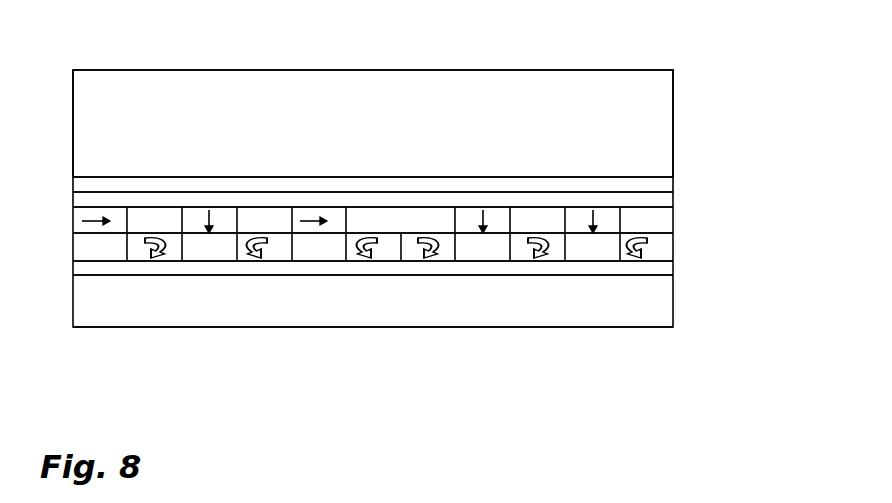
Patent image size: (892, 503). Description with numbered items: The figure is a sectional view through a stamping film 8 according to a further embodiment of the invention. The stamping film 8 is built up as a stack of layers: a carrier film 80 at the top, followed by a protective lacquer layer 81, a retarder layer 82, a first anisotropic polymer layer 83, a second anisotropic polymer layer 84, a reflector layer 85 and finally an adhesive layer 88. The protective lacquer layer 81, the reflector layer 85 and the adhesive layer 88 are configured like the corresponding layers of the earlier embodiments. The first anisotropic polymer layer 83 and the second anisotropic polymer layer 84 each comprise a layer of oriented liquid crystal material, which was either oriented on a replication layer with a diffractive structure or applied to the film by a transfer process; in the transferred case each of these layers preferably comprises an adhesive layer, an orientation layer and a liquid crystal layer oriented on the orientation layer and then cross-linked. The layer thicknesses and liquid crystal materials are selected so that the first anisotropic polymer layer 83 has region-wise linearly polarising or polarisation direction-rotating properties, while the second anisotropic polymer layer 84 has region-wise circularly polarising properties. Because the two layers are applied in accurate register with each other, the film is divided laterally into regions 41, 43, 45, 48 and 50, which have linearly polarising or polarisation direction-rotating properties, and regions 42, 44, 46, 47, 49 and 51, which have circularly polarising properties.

The stamping film 8 is at (70, 70).
The region 41 is at (110, 228).
The region 42 is at (170, 255).
The region 43 is at (222, 225).
The region 44 is at (273, 248).
The region 45 is at (335, 225).
The region 46 is at (387, 252).
The region 47 is at (440, 255).
The region 48 is at (497, 222).
The region 49 is at (553, 255).
The region 50 is at (606, 225).
The region 51 is at (625, 255).
The carrier film 80 is at (657, 98).
The protective lacquer layer 81 is at (668, 184).
The retarder layer 82 is at (668, 197).
The first anisotropic polymer layer 83 is at (667, 218).
The second anisotropic polymer layer 84 is at (667, 245).
The reflector layer 85 is at (667, 268).
The adhesive layer 88 is at (665, 315).